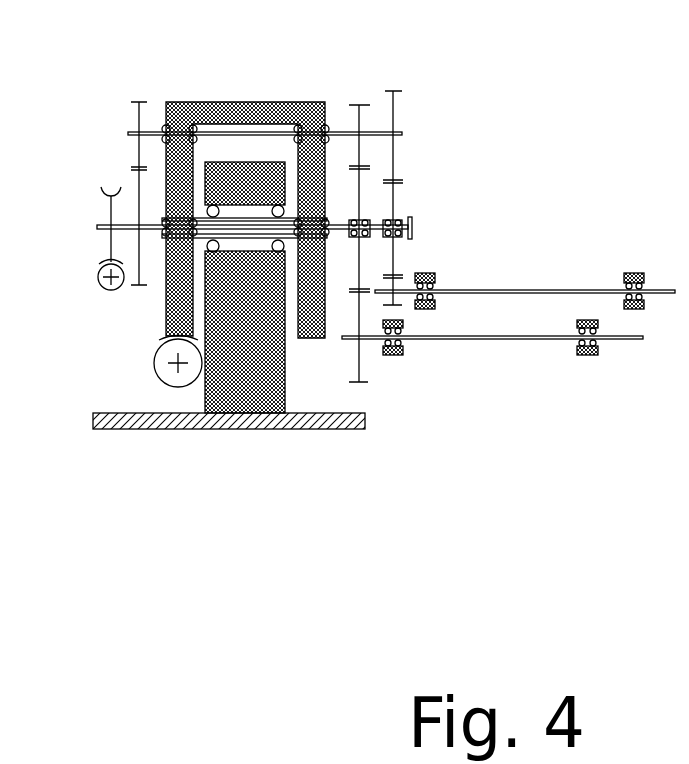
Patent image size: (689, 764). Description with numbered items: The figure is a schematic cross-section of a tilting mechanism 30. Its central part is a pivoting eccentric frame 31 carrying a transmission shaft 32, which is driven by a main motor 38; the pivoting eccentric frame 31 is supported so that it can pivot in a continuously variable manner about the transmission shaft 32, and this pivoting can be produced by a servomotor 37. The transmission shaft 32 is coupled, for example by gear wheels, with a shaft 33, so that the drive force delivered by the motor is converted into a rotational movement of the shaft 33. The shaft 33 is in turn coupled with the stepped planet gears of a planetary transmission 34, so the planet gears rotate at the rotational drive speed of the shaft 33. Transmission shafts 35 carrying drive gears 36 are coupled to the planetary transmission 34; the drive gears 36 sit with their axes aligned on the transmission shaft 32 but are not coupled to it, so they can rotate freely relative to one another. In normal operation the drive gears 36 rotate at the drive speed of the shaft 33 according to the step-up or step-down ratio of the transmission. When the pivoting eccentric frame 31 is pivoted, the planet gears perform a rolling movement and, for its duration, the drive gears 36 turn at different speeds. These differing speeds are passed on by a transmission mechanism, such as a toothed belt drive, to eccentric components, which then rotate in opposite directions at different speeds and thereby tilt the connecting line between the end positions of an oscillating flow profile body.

The tilting mechanism 30 is at (148, 87).
The pivoting eccentric frame 31 is at (247, 103).
The transmission shaft 32 is at (97, 222).
The shaft 33 is at (402, 133).
The planetary transmission 34 is at (393, 112).
The transmission shafts 35 is at (515, 338).
The drive gears 36 is at (393, 202).
The servomotor 37 is at (158, 372).
The main motor 38 is at (100, 285).